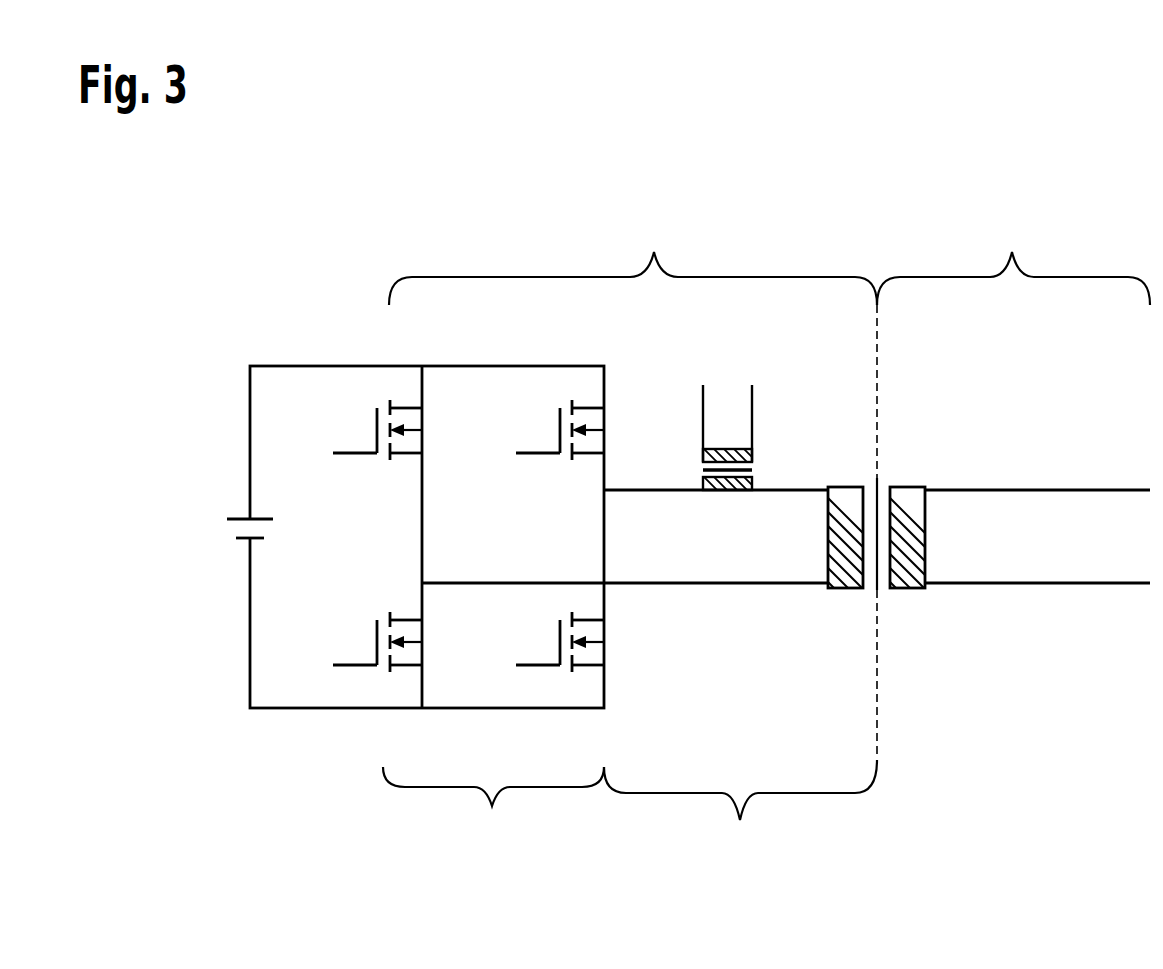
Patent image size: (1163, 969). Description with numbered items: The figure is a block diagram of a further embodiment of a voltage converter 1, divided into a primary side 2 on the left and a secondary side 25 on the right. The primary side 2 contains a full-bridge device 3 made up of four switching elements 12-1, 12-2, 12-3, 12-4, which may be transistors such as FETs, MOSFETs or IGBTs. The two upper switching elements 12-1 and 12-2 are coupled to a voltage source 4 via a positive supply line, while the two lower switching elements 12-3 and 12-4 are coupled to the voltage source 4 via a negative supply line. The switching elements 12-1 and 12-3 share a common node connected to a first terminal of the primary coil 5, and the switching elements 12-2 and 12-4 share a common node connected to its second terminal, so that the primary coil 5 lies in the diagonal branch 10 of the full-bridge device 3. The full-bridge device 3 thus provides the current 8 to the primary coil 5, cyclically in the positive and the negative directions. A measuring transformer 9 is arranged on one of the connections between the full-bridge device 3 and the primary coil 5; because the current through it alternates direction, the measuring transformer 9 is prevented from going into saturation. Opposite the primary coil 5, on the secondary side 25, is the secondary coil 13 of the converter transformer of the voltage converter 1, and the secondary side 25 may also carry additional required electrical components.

The voltage converter 1 is at (910, 184).
The primary side 2 is at (633, 257).
The full-bridge device 3 is at (427, 616).
The voltage source 4 is at (236, 517).
The primary coil 5 is at (851, 590).
The current 8 is at (793, 486).
The measuring transformer 9 is at (703, 458).
The diagonal branch 10 is at (740, 813).
The switching element 12-1 is at (377, 428).
The switching element 12-2 is at (560, 428).
The switching element 12-3 is at (377, 641).
The switching element 12-4 is at (560, 641).
The secondary coil 13 is at (913, 590).
The secondary side 25 is at (1013, 257).